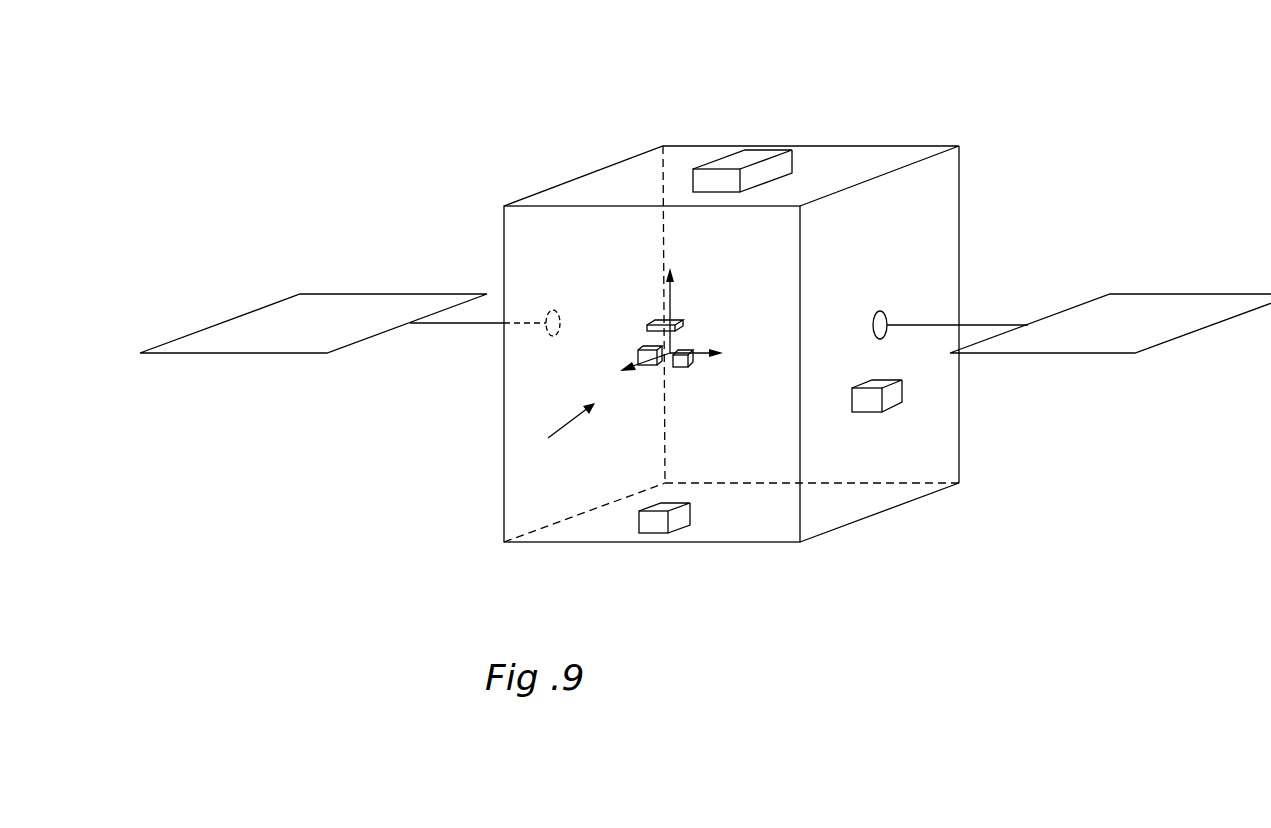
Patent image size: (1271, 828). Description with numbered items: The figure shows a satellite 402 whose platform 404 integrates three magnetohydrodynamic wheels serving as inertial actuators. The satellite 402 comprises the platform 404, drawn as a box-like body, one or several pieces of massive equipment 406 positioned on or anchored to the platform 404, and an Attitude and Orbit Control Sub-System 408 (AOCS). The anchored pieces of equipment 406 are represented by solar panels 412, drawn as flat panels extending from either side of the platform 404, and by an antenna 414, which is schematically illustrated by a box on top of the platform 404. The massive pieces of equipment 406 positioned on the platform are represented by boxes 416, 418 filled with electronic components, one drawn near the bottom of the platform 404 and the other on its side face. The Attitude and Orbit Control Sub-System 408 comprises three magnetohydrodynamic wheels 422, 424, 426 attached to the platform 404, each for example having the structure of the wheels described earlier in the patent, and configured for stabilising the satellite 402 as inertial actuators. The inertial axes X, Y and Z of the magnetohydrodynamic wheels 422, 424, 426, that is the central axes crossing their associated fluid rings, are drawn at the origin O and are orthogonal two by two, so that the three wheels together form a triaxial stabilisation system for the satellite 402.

The satellite 402 is at (546, 69).
The platform 404 is at (596, 173).
The pieces of massive equipment 406 is at (1013, 525).
The Attitude and Orbit Control Sub-System 408 is at (575, 422).
The solar panels 412 is at (310, 349).
The antenna 414 is at (750, 160).
The box filled with electronic components 416 is at (655, 523).
The box filled with electronic components 418 is at (885, 397).
The magnetohydrodynamic wheel 422 is at (650, 368).
The magnetohydrodynamic wheel 424 is at (688, 360).
The magnetohydrodynamic wheel 426 is at (660, 322).